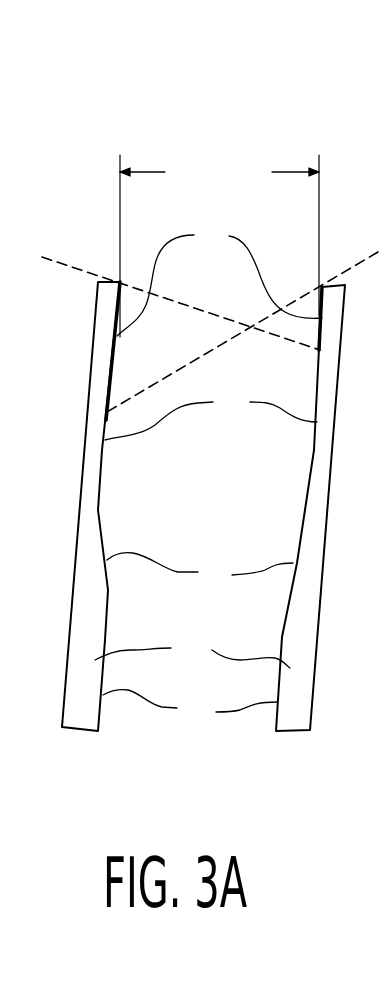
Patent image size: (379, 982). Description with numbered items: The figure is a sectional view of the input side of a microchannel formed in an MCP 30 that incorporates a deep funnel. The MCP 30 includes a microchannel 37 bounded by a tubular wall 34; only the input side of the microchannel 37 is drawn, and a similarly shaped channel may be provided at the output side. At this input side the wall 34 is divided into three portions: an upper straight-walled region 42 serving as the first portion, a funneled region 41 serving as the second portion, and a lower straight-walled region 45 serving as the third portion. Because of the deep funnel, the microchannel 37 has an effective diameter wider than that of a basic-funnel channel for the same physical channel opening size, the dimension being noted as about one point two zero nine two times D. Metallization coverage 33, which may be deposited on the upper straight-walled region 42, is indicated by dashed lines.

The MCP 30 is at (223, 118).
The metallization coverage 33 is at (219, 276).
The upper straight-walled region 42 is at (211, 412).
The microchannel 37 is at (204, 518).
The funneled region 41 is at (200, 570).
The tubular wall 34 is at (192, 649).
The lower straight-walled region 45 is at (190, 707).